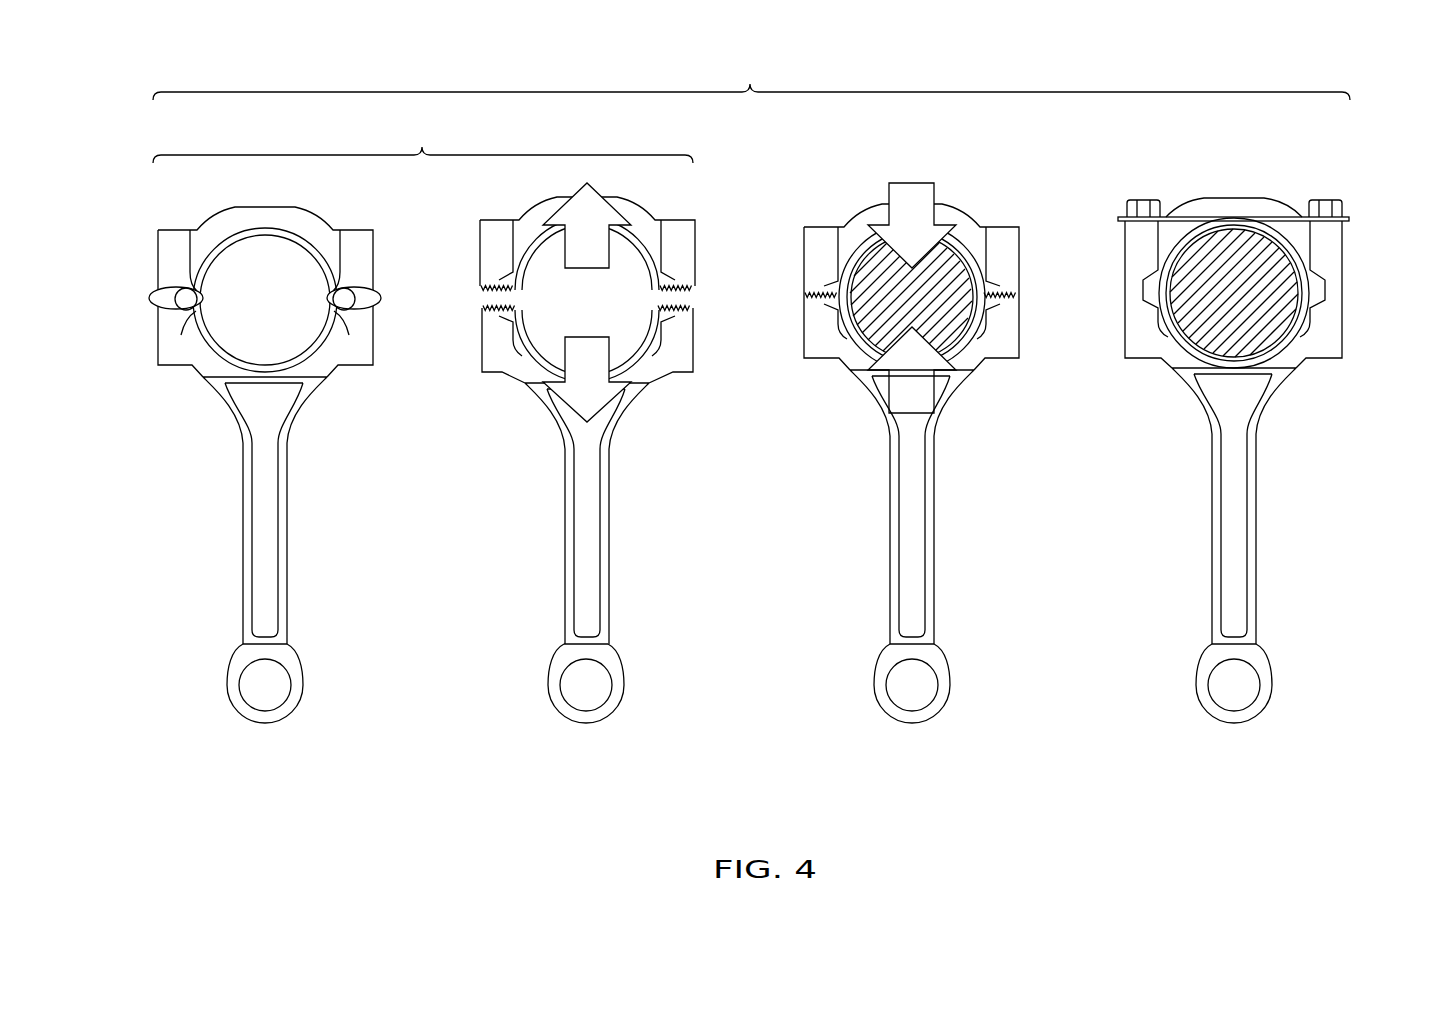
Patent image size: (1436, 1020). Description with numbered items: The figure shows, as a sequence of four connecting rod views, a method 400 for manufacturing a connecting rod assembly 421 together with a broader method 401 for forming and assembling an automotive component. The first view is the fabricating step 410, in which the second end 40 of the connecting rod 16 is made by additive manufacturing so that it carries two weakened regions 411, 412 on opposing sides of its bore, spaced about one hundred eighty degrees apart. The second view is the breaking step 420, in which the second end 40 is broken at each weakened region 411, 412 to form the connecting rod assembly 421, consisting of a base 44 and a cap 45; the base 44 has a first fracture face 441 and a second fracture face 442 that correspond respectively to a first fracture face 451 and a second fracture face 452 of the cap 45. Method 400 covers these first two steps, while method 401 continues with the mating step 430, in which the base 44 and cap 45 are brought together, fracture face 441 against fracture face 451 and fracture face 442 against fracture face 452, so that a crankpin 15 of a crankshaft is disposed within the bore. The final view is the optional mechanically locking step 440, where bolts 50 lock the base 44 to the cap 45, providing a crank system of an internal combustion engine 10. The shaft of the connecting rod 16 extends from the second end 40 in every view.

The method for forming and assembling an automotive component 401 is at (751, 71).
The method for manufacturing a connecting rod assembly 400 is at (423, 138).
The fabricating 410 is at (250, 513).
The second end 40 is at (250, 465).
The first weakened region 411 is at (156, 289).
The second weakened region 412 is at (377, 310).
The breaking 420 is at (597, 501).
The connecting rod assembly 421 is at (597, 309).
The cap 45 is at (564, 242).
The base 44 is at (582, 369).
The first fracture face of the cap 451 is at (505, 288).
The second fracture face of the cap 452 is at (668, 288).
The first fracture face of the base 441 is at (506, 304).
The second fracture face of the base 442 is at (668, 305).
The mating 430 is at (1051, 479).
The crankpin 15 is at (940, 271).
The mechanically locking 440 is at (1273, 474).
The internal combustion engine 10 is at (1273, 248).
The bolts 50 is at (1143, 197).
The connecting rod 16 is at (320, 556).